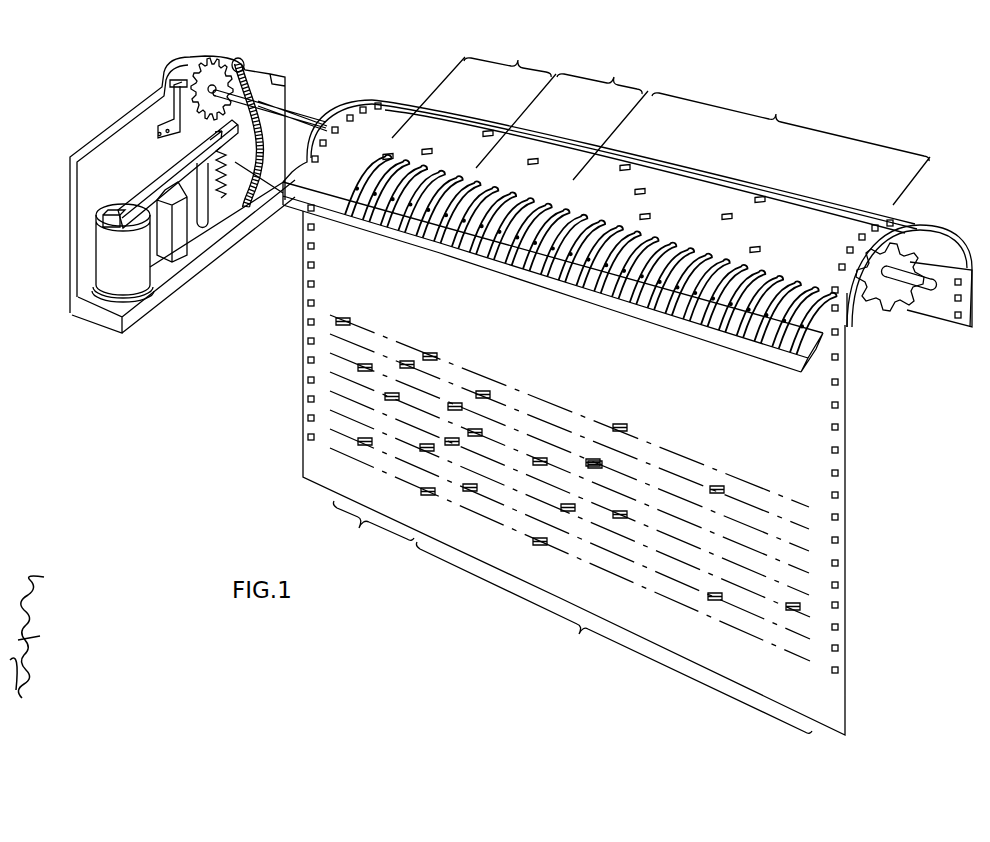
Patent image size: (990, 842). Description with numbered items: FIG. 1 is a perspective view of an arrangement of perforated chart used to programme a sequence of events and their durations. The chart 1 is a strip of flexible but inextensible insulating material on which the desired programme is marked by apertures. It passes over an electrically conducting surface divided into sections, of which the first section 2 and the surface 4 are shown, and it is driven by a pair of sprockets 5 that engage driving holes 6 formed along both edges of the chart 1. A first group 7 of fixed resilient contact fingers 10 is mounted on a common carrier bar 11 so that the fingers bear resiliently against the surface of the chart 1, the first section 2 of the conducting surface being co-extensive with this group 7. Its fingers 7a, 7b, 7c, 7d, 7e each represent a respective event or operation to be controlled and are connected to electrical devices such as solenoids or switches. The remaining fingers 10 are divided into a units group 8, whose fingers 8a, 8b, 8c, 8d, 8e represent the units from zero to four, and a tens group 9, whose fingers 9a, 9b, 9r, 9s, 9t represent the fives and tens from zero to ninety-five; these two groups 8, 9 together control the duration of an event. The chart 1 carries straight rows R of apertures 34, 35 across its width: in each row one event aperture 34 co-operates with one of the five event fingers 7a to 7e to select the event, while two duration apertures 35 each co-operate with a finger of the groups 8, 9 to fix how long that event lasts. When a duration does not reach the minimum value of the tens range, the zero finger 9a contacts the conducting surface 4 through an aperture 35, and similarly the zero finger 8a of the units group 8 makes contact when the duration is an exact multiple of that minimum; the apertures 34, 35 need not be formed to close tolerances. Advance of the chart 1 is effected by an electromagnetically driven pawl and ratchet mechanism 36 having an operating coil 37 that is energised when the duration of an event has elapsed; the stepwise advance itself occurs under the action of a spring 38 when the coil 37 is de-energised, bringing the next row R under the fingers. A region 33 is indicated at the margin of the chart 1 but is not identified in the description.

The chart 1 is at (478, 548).
The first section of conducting surface 2 is at (310, 142).
The conducting surface section 4 is at (917, 229).
The sprockets 5 is at (895, 304).
The driving holes 6 is at (308, 322).
The first group of contact fingers 7 is at (447, 138).
The units group of fingers 8 is at (541, 161).
The tens group of fingers 9 is at (726, 222).
The contact fingers 10 is at (828, 318).
The common carrier bar 11 is at (794, 368).
The margin field 33 is at (373, 526).
The event aperture 34 is at (387, 154).
The duration aperture 35 is at (540, 162).
The pawl and ratchet mechanism 36 is at (242, 50).
The operating coil 37 is at (145, 274).
The spring 38 is at (229, 190).
The rows of apertures R is at (657, 552).
The event finger 7a is at (368, 168).
The event finger 7b is at (400, 159).
The event finger 7c is at (423, 166).
The event finger 7d is at (441, 174).
The event finger 7e is at (459, 179).
The zero finger of units group 8a is at (477, 184).
The units finger 8b is at (494, 190).
The units finger 8c is at (512, 193).
The units finger 8d is at (529, 201).
The units finger 8e is at (547, 204).
The zero finger of tens group 9a is at (565, 210).
The reed 9b is at (584, 216).
The reed 9r is at (793, 281).
The reed 9s is at (812, 287).
The reed 9t is at (830, 292).